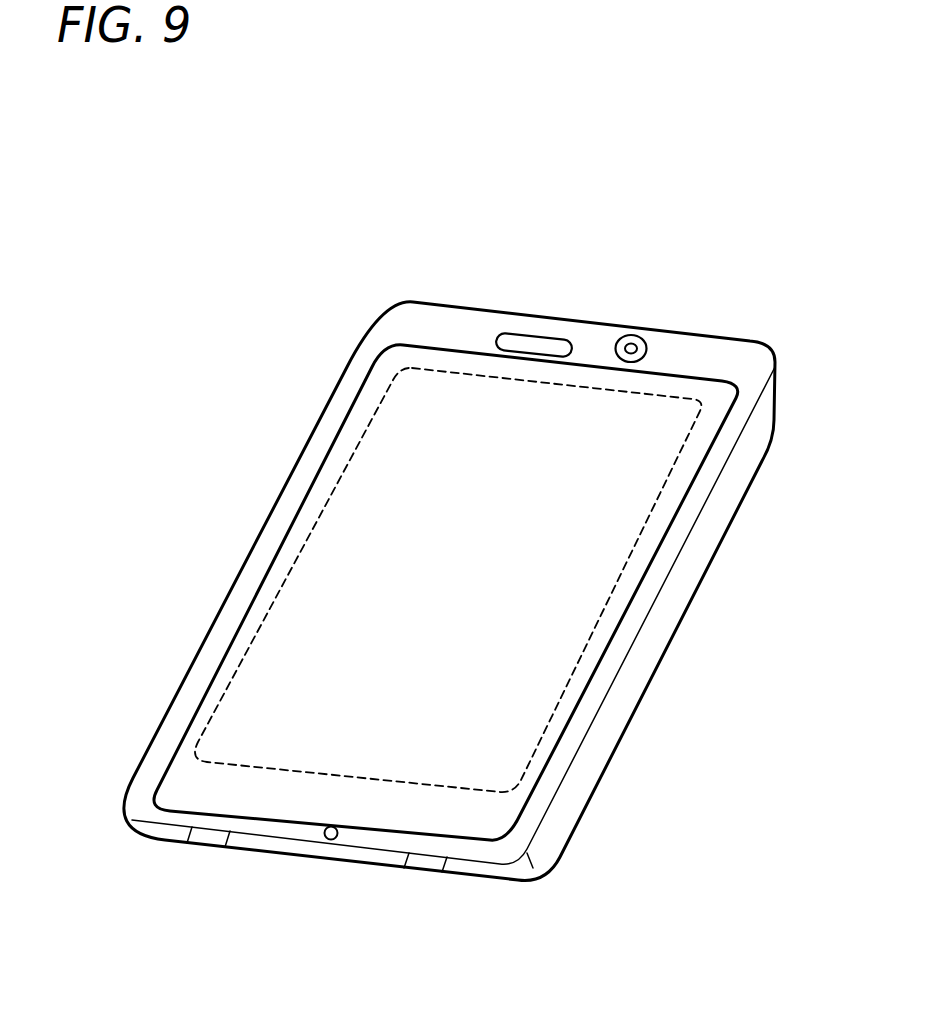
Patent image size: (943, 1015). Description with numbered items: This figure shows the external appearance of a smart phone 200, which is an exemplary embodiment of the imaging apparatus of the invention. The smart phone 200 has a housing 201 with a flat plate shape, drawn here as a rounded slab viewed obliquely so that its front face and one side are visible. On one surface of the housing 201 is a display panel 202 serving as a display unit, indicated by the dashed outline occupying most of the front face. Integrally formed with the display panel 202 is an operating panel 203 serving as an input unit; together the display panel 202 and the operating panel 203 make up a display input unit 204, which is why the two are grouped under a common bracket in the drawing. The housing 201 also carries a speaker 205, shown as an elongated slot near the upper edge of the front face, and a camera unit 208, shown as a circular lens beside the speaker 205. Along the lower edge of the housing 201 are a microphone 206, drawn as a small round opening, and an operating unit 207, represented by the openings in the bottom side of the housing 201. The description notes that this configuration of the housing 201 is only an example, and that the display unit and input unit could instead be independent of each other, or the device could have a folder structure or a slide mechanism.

The smart phone 200 is at (227, 389).
The housing 201 is at (390, 317).
The display panel 202 is at (667, 382).
The operating panel 203 is at (713, 378).
The display input unit 204 is at (817, 245).
The speaker 205 is at (534, 337).
The microphone 206 is at (328, 847).
The operating unit 207 is at (207, 848).
The camera unit 208 is at (627, 336).